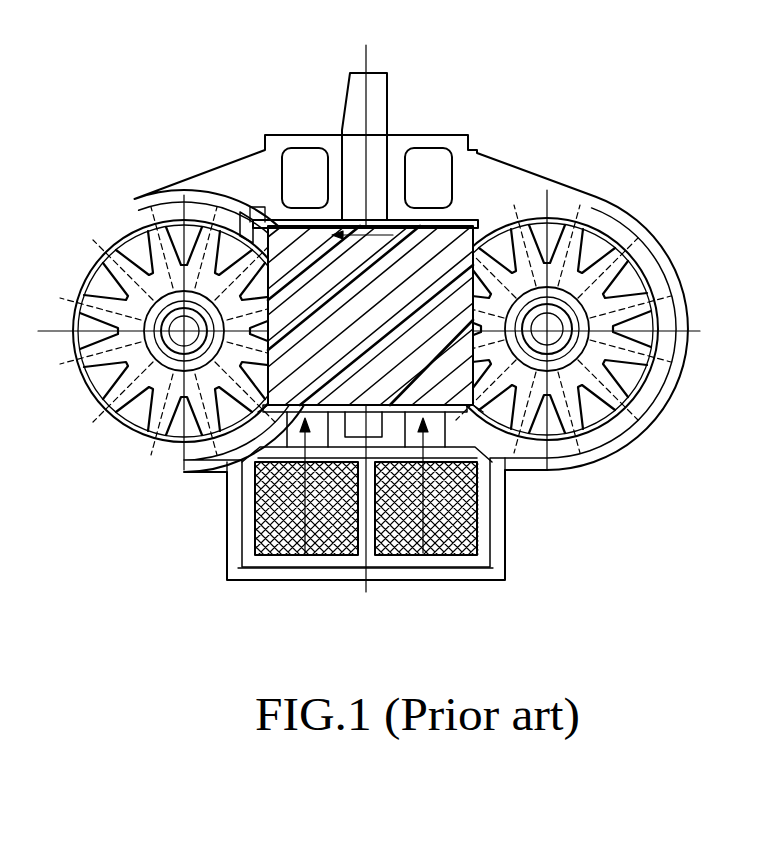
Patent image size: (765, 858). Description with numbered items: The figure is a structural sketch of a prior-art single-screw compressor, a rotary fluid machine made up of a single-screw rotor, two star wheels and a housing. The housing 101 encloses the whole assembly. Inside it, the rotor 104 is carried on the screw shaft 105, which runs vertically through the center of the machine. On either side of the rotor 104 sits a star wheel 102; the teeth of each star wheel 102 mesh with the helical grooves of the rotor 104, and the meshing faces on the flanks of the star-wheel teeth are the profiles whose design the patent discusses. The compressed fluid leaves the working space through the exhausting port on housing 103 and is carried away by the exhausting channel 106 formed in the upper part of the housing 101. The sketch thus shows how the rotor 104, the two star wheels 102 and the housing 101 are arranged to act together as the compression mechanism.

The housing 101 is at (208, 473).
The star wheel 102 is at (148, 238).
The exhausting port on housing 103 is at (250, 215).
The rotor 104 is at (300, 238).
The screw shaft 105 is at (368, 117).
The exhausting channel 106 is at (437, 170).